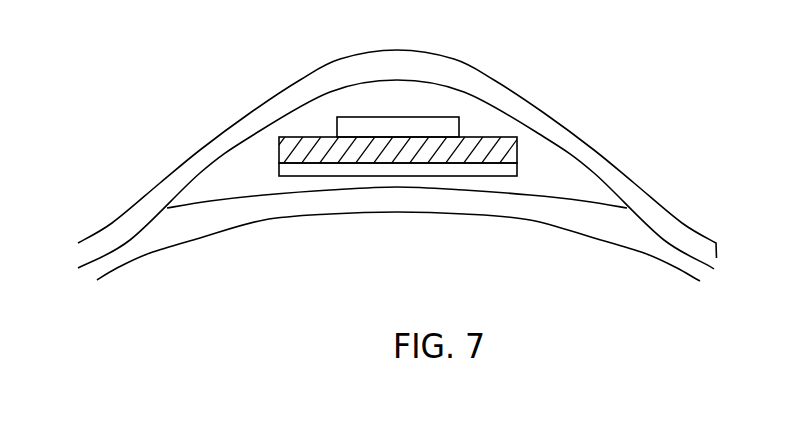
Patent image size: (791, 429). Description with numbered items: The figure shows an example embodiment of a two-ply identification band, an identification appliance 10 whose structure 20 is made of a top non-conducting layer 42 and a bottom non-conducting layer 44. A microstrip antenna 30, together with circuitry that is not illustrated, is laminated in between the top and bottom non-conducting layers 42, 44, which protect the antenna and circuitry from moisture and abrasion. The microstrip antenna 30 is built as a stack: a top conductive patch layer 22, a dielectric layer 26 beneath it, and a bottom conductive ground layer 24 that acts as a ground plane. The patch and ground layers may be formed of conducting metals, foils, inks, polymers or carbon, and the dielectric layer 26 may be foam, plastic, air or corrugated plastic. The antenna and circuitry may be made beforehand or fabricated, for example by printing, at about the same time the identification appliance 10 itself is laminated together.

The identification appliance 10 is at (178, 97).
The structure 20 is at (113, 232).
The conductive patch layer 22 is at (380, 123).
The conductive ground layer 24 is at (491, 175).
The dielectric layer 26 is at (308, 150).
The microstrip antenna 30 is at (478, 128).
The top non-conducting layer 42 is at (586, 148).
The bottom non-conducting layer 44 is at (347, 200).